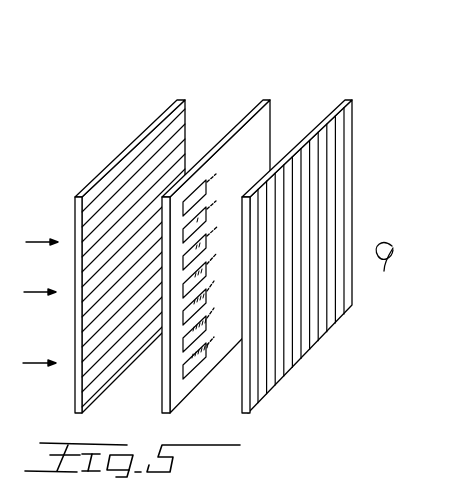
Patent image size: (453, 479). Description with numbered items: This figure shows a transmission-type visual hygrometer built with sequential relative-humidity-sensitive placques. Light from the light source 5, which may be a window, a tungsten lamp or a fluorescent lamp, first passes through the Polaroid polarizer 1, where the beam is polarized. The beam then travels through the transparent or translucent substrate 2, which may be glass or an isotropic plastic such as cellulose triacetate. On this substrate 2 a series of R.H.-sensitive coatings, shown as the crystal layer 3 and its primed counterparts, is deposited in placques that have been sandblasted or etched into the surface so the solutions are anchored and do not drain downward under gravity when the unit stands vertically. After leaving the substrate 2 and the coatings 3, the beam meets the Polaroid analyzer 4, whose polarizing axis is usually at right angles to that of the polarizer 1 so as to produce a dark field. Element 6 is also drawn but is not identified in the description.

The Polaroid polarizer 1 is at (180, 100).
The transparent or translucent substrate 2 is at (268, 100).
The crystal layer 3 is at (215, 267).
The Polaroid analyzer 4 is at (352, 100).
The light source 5 is at (30, 243).
The sensing element 6 is at (392, 246).